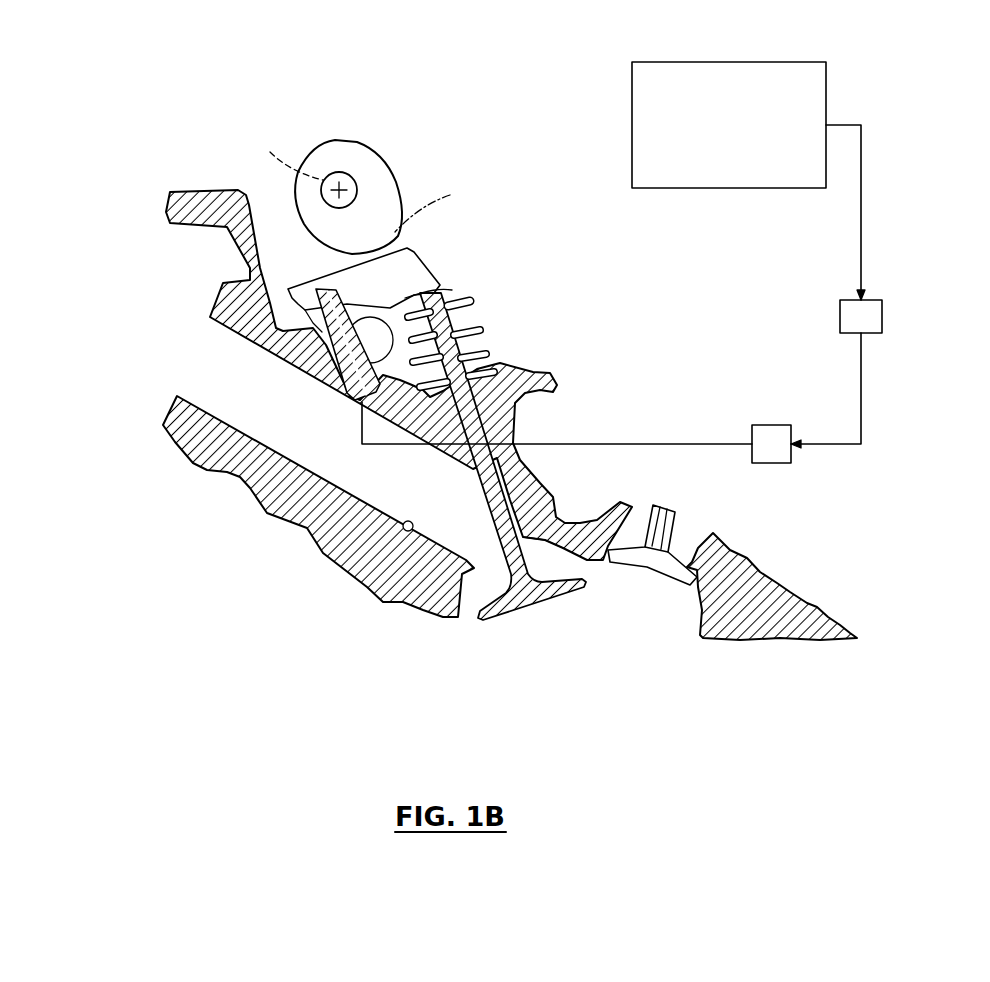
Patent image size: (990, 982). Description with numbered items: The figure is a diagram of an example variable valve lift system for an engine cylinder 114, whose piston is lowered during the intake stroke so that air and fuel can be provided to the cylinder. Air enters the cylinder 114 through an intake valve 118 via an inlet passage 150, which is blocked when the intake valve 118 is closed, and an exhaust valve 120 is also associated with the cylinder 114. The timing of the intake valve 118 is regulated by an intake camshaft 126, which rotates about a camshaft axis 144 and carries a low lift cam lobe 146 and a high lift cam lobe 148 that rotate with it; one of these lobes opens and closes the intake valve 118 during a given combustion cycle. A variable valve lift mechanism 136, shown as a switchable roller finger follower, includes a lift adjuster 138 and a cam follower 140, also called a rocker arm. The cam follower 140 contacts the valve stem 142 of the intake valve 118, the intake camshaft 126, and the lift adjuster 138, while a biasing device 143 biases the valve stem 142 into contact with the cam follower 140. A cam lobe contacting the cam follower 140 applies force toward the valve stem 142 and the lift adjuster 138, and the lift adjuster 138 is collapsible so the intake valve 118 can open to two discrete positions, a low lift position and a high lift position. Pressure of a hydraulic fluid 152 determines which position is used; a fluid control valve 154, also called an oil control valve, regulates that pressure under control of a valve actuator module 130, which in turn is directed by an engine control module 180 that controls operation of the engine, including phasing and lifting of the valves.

The cylinder 114 is at (692, 610).
The intake valve 118 is at (523, 537).
The exhaust valve 120 is at (673, 524).
The intake camshaft 126 is at (346, 176).
The valve actuator module 130 is at (882, 318).
The variable valve lift (VVL) mechanism 136 is at (488, 212).
The lift adjuster 138 is at (313, 360).
The cam follower 140 is at (423, 243).
The valve stem 142 is at (440, 293).
The biasing device 143 is at (490, 331).
The camshaft axis 144 is at (286, 153).
The low lift cam lobe 146 is at (387, 170).
The high lift cam lobe 148 is at (438, 208).
The inlet passage 150 is at (394, 531).
The hydraulic fluid 152 is at (672, 440).
The fluid control valve 154 is at (790, 458).
The engine control module (ECM) 180 is at (727, 62).